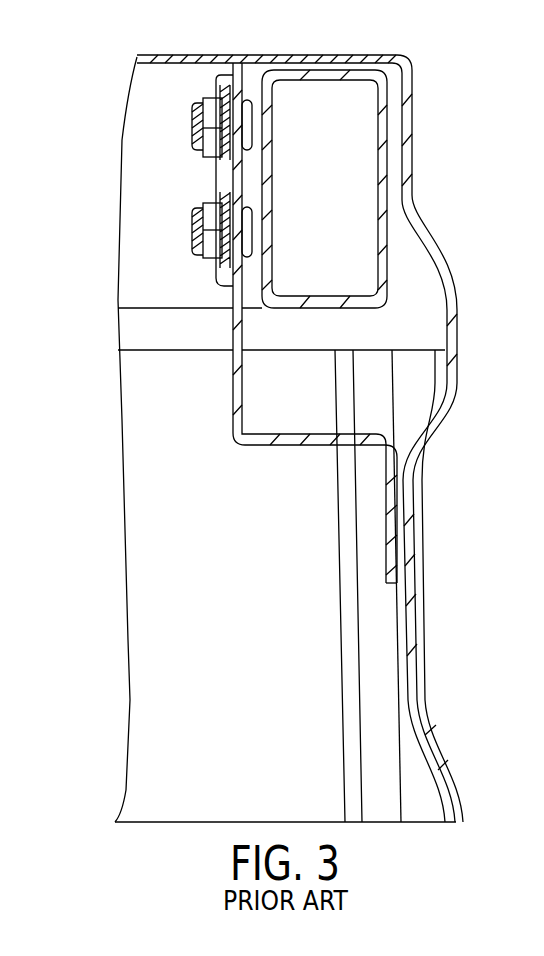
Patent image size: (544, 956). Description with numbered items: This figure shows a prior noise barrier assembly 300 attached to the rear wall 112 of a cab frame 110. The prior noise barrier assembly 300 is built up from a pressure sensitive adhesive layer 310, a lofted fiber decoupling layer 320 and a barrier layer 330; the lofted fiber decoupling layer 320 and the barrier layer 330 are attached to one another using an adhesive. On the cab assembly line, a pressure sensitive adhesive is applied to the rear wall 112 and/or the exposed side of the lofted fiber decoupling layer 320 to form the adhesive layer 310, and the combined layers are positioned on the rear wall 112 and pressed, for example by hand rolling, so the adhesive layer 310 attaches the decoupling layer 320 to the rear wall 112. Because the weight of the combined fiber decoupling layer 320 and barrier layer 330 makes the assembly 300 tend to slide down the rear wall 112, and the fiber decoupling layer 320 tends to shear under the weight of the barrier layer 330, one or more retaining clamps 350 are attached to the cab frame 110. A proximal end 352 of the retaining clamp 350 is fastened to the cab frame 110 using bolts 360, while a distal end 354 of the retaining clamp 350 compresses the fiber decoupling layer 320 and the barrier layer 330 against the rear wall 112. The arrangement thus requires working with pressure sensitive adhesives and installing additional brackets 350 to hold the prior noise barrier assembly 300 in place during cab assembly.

The cab frame 110 is at (96, 108).
The rear wall 112 is at (443, 737).
The prior noise barrier assembly 300 is at (262, 566).
The pressure sensitive adhesive layer 310 is at (392, 602).
The lofted fiber decoupling layer 320 is at (380, 400).
The barrier layer 330 is at (340, 617).
The retaining clamp 350 is at (321, 442).
The proximal end 352 is at (228, 178).
The distal end 354 is at (390, 505).
The bolts 360 is at (200, 120).